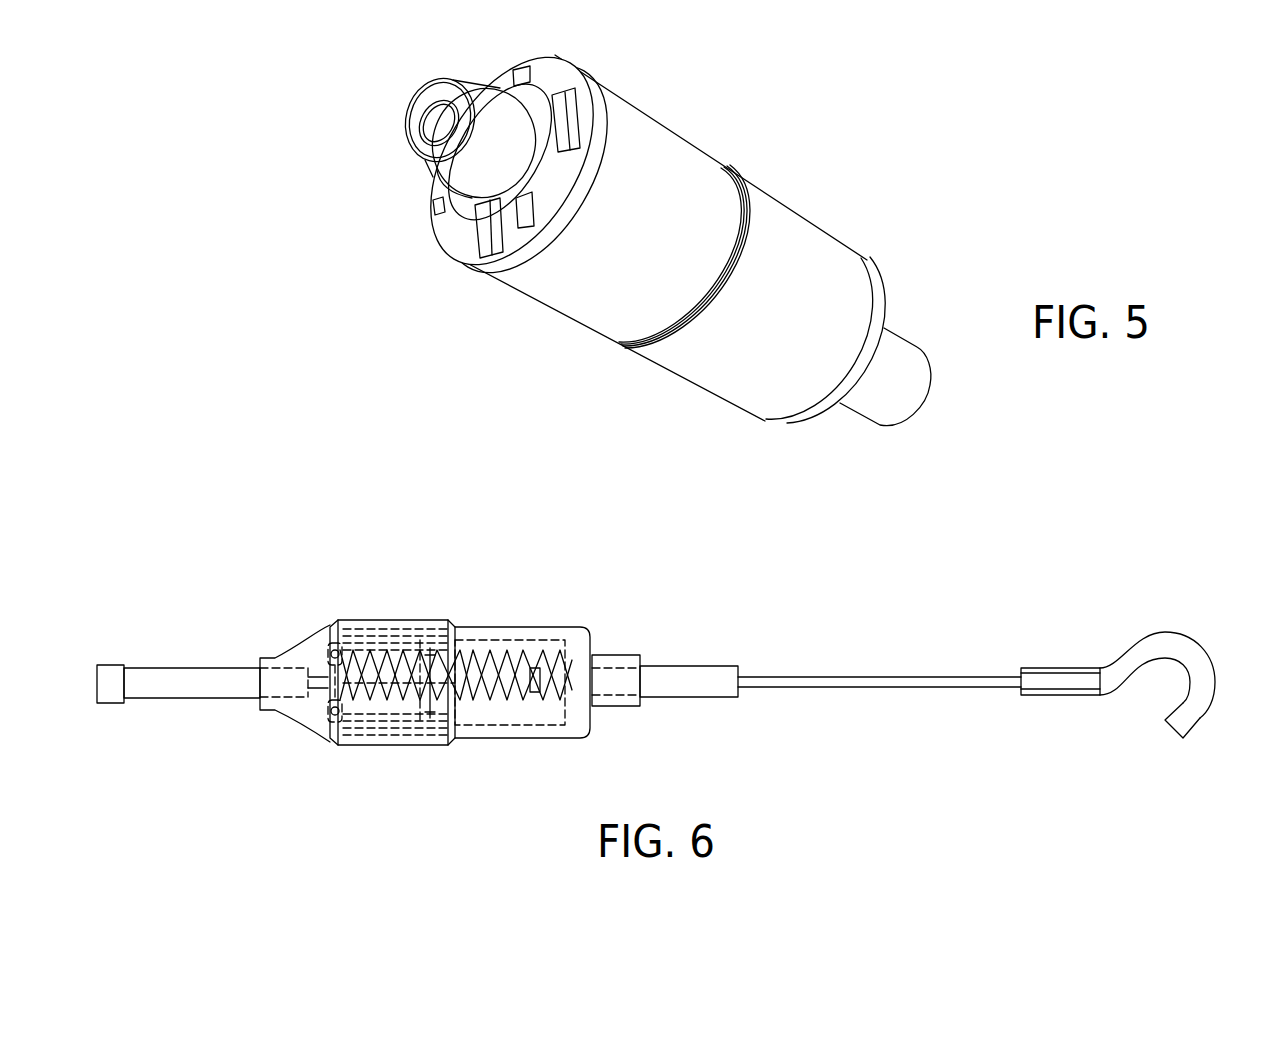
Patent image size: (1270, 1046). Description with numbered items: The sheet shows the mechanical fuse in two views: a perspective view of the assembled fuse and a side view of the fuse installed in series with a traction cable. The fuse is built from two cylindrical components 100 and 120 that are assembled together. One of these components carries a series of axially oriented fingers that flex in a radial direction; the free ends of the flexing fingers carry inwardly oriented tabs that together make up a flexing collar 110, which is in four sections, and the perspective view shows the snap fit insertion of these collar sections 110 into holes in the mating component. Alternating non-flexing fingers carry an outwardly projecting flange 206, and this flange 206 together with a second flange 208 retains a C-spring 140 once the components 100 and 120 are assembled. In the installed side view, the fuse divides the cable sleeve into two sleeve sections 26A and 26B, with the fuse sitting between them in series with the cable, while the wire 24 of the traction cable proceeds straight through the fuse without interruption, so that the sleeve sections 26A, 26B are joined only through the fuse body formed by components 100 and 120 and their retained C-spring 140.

In FIG. 5, the cylindrical component 100 is at (587, 302).
In FIG. 6, the cylindrical component 100 is at (583, 635).
In FIG. 5, the collar 110 is at (498, 222).
In FIG. 5, the cylindrical component 120 is at (393, 145).
In FIG. 6, the cylindrical component 120 is at (301, 648).
In FIG. 5, the C-spring 140 is at (600, 285).
In FIG. 6, the C-spring 140 is at (378, 620).
In FIG. 5, the flange 206 is at (548, 53).
In FIG. 5, the flange 208 is at (747, 227).
In FIG. 6, the wire 24 is at (845, 682).
In FIG. 6, the sleeve section 26A is at (190, 685).
In FIG. 6, the sleeve section 26B is at (713, 687).